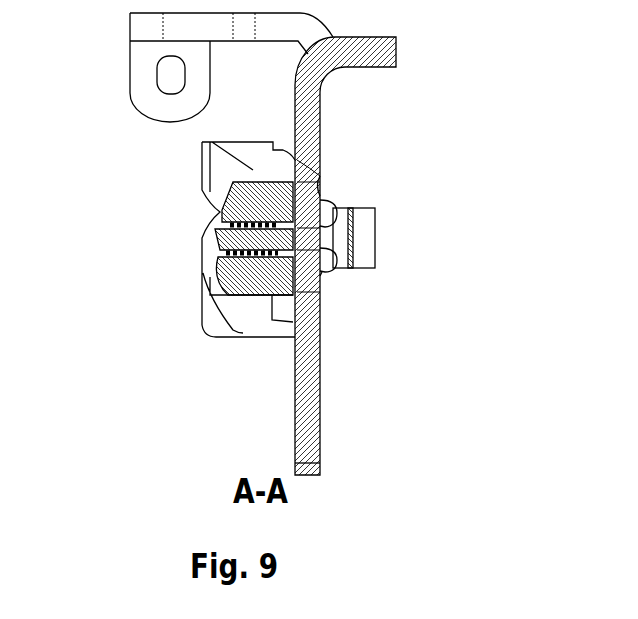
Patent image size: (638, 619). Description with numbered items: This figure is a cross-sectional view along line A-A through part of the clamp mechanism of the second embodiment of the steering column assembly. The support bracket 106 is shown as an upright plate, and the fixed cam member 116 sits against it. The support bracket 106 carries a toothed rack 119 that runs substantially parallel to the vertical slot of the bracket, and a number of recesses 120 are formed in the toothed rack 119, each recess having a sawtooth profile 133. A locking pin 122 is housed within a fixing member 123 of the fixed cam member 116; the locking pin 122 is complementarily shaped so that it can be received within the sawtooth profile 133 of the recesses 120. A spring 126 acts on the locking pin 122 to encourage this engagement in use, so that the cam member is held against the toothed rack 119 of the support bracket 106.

The support bracket 106 is at (305, 101).
The fixed cam member 116 is at (240, 164).
The toothed rack 119 is at (322, 163).
The recesses 120 is at (322, 190).
The locking pin 122 is at (228, 233).
The fixing member 123 is at (240, 268).
The spring 126 is at (222, 213).
The sawtooth profile 133 is at (322, 272).